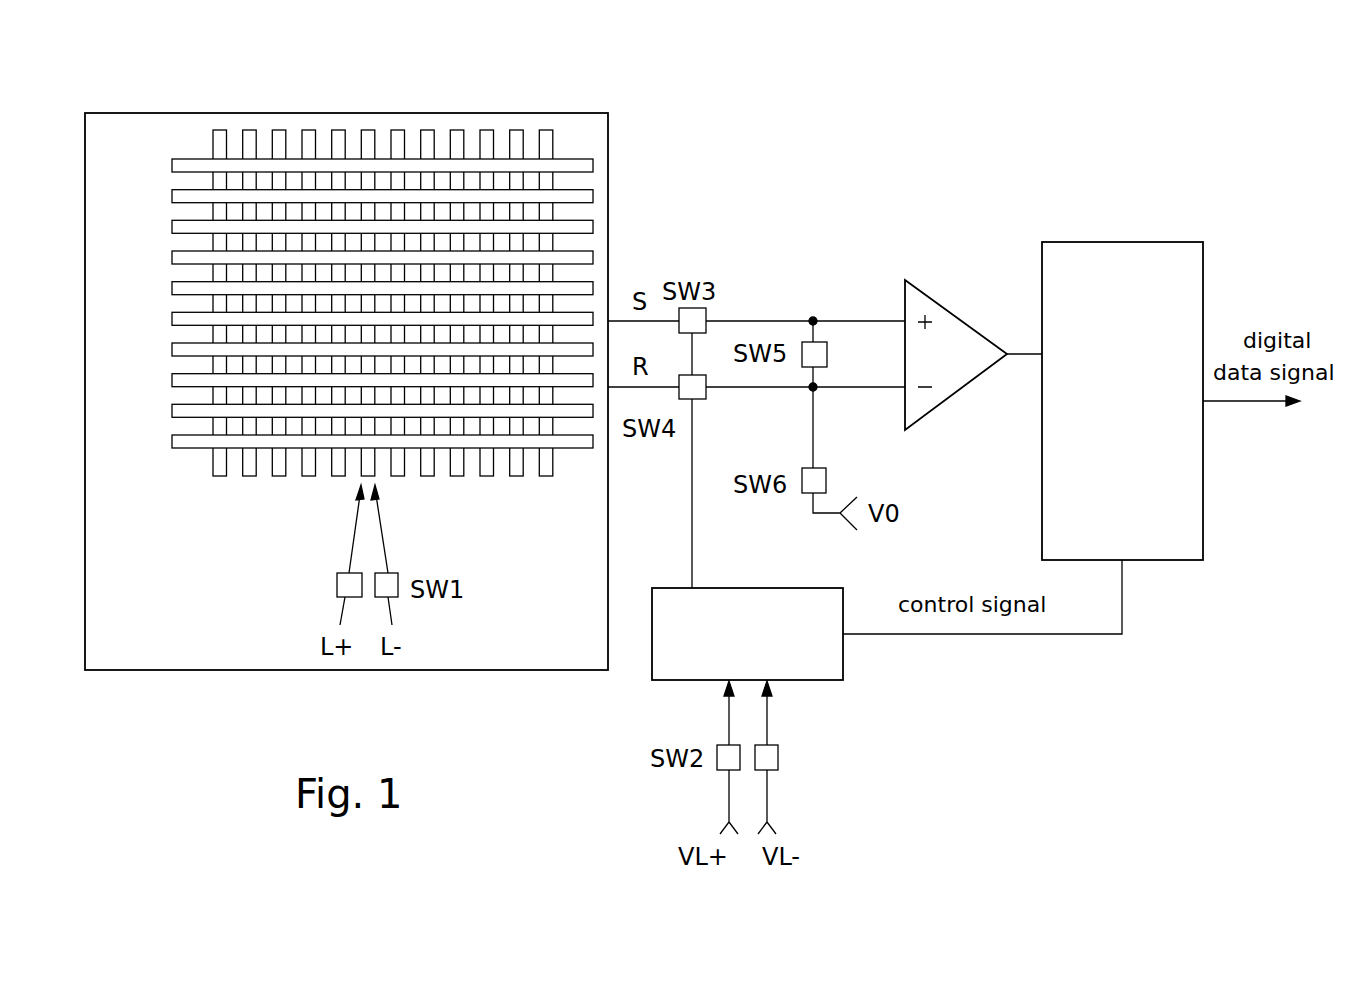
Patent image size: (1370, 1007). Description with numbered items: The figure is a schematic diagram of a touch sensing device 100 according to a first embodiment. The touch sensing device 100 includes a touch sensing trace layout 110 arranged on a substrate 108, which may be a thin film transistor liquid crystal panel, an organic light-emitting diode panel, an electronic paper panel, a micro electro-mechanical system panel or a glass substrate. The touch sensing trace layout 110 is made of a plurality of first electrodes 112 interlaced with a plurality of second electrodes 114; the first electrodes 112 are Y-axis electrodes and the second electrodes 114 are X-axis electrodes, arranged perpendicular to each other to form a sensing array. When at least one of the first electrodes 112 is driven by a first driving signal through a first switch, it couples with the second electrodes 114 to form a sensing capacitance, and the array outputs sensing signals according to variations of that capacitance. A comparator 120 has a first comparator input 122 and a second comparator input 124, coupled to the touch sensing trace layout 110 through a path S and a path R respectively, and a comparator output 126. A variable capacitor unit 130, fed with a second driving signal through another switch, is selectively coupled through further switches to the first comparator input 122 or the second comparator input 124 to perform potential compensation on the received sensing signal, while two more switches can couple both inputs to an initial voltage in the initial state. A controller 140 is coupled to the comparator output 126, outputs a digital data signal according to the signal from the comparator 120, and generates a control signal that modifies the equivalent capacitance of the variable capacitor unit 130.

The touch sensing device 100 is at (753, 95).
The substrate 108 is at (167, 672).
The touch sensing trace layout 110 is at (388, 258).
The first electrodes 112 is at (220, 130).
The second electrodes 114 is at (575, 158).
The comparator 120 is at (958, 318).
The first comparator input 122 is at (902, 312).
The second comparator input 124 is at (902, 395).
The comparator output 126 is at (1005, 360).
The variable capacitor unit 130 is at (813, 585).
The controller 140 is at (1142, 438).